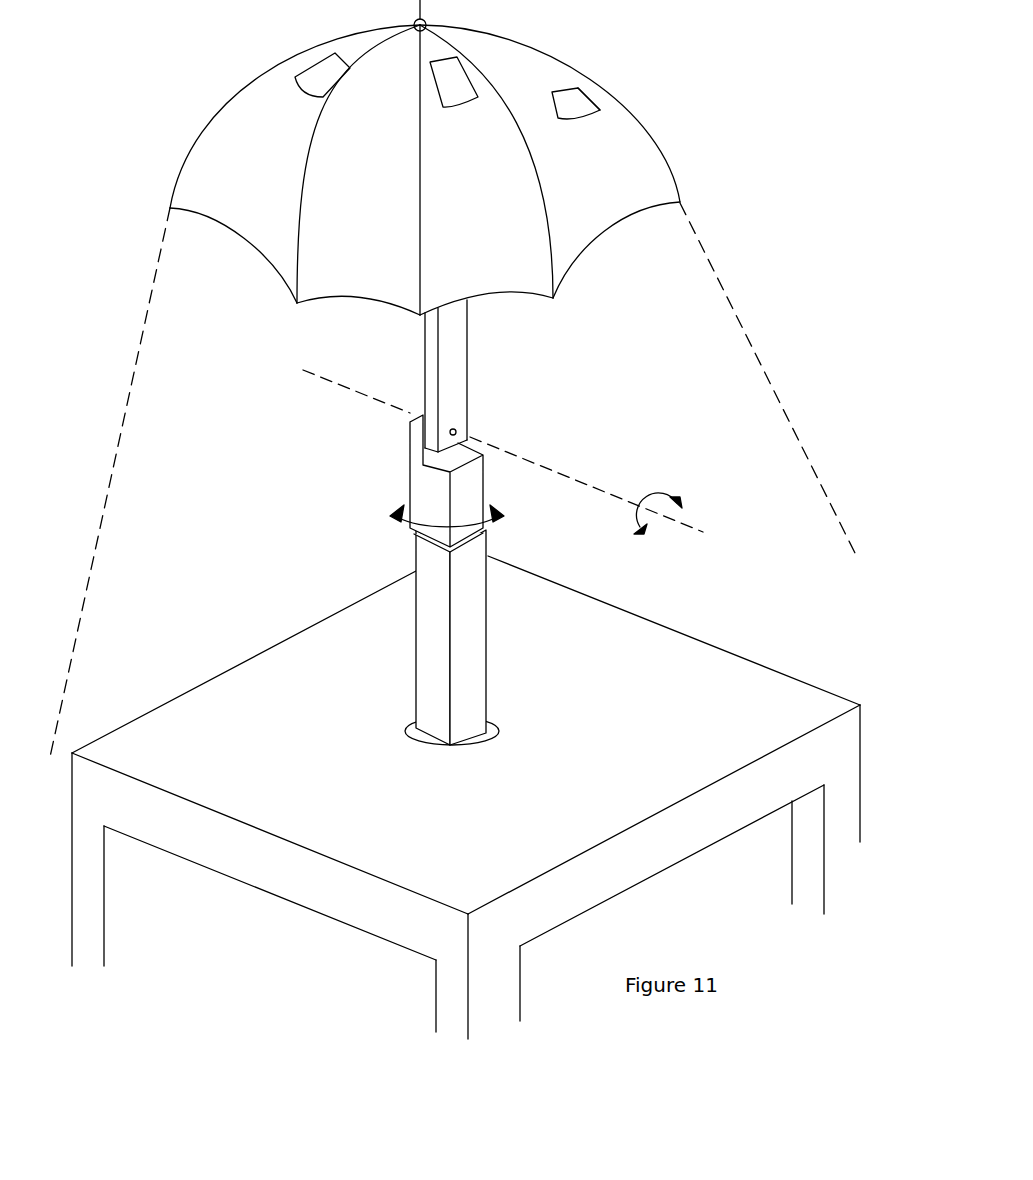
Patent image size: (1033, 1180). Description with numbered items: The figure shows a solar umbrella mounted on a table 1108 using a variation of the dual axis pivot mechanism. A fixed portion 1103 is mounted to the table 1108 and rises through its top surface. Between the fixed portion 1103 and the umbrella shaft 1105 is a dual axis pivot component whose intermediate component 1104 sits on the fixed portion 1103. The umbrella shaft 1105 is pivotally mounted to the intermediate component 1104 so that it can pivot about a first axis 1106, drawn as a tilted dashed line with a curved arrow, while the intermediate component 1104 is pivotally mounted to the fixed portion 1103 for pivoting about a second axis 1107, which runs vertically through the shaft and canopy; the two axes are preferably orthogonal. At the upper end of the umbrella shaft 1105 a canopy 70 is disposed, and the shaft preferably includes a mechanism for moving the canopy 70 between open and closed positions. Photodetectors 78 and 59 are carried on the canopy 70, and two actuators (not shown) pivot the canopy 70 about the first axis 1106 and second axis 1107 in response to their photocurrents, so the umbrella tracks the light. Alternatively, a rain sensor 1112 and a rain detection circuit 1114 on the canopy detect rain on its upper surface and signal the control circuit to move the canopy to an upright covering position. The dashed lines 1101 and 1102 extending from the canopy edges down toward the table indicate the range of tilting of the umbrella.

The second axis 1107 is at (418, 3).
The photodetector 78 is at (317, 75).
The photodetector 59 is at (458, 82).
The rain sensor 1112 is at (585, 100).
The rain detection circuit 1114 is at (570, 108).
The canopy 70 is at (658, 157).
The right tilt range line 1102 is at (753, 318).
The umbrella shaft 1105 is at (452, 403).
The intermediate component 1104 is at (412, 467).
The first axis 1106 is at (610, 492).
The left tilt range line 1101 is at (83, 615).
The fixed portion 1103 is at (470, 667).
The table 1108 is at (703, 639).